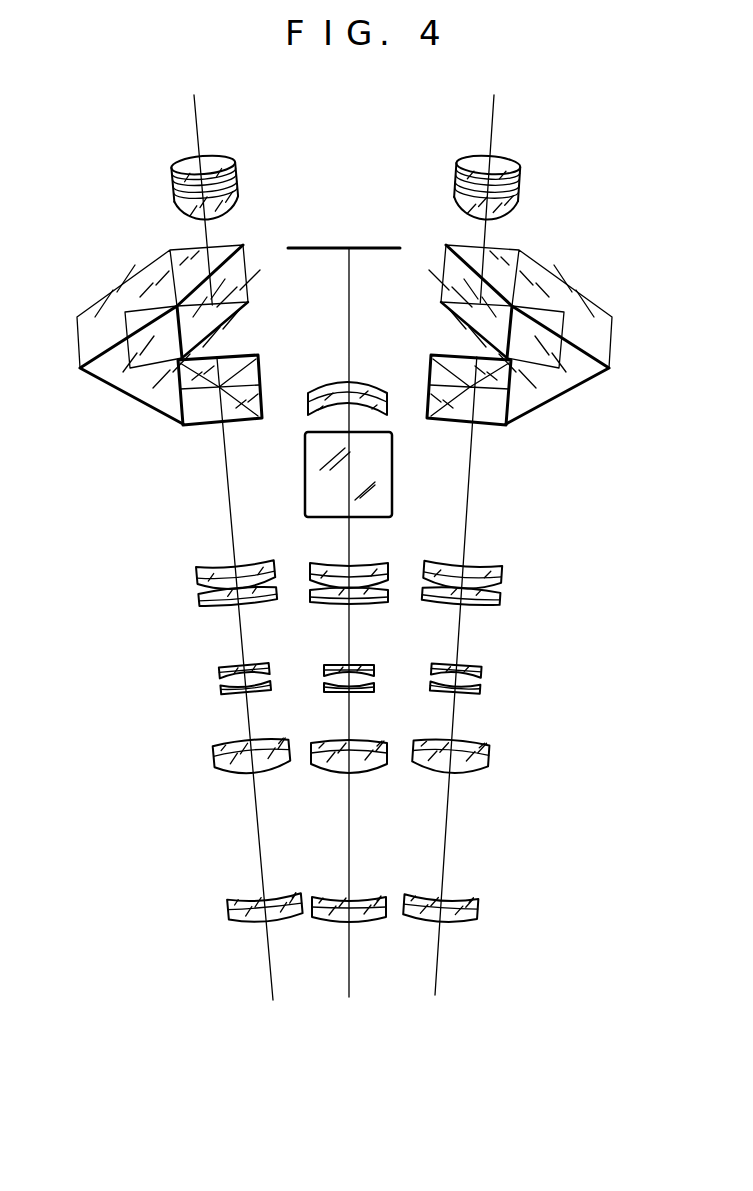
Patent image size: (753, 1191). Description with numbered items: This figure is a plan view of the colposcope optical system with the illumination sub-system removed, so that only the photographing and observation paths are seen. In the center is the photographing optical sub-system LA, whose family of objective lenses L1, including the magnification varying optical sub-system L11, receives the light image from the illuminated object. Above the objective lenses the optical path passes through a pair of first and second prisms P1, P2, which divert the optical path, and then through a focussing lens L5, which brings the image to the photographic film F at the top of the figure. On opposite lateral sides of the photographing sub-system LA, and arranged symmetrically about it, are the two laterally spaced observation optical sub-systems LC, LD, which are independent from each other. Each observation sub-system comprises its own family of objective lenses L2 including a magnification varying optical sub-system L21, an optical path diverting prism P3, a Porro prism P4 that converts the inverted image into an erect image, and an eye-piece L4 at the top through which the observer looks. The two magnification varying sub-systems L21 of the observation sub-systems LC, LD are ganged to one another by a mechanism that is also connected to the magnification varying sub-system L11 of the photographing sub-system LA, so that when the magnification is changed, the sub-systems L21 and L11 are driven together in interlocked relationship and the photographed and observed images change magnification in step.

The eye-piece L4 is at (171, 172).
The Porro prism P4 is at (611, 346).
The optical path diverting prism P3 is at (505, 436).
The photographic film F is at (365, 250).
The photographing optical sub-system LA is at (388, 348).
The focussing lens L5 is at (329, 388).
The second prism P2 is at (379, 490).
The first prism P1 is at (383, 509).
The family of objective lenses L1 is at (347, 741).
The magnification varying optical sub-system L11 is at (315, 665).
The observation optical sub-system LC is at (220, 552).
The observation optical sub-system LD is at (505, 550).
The family of objective lenses L2 is at (351, 727).
The magnification varying optical sub-system L21 is at (349, 720).